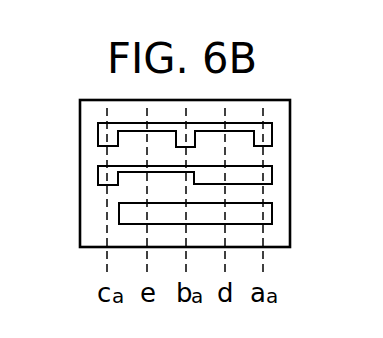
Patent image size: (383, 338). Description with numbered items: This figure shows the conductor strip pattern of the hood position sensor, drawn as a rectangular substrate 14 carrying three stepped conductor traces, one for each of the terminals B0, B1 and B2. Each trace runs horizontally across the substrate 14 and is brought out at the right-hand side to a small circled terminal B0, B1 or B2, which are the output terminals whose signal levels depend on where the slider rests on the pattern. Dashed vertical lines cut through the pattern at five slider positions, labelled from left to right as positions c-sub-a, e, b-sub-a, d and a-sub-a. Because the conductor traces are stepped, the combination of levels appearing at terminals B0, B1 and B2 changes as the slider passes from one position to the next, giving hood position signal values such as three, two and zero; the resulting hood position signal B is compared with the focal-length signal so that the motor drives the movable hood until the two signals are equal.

The circuit board / substrate 14 is at (90, 219).
The terminal B0 is at (272, 134).
The terminal B1 is at (272, 173).
The terminal B2 is at (272, 213).